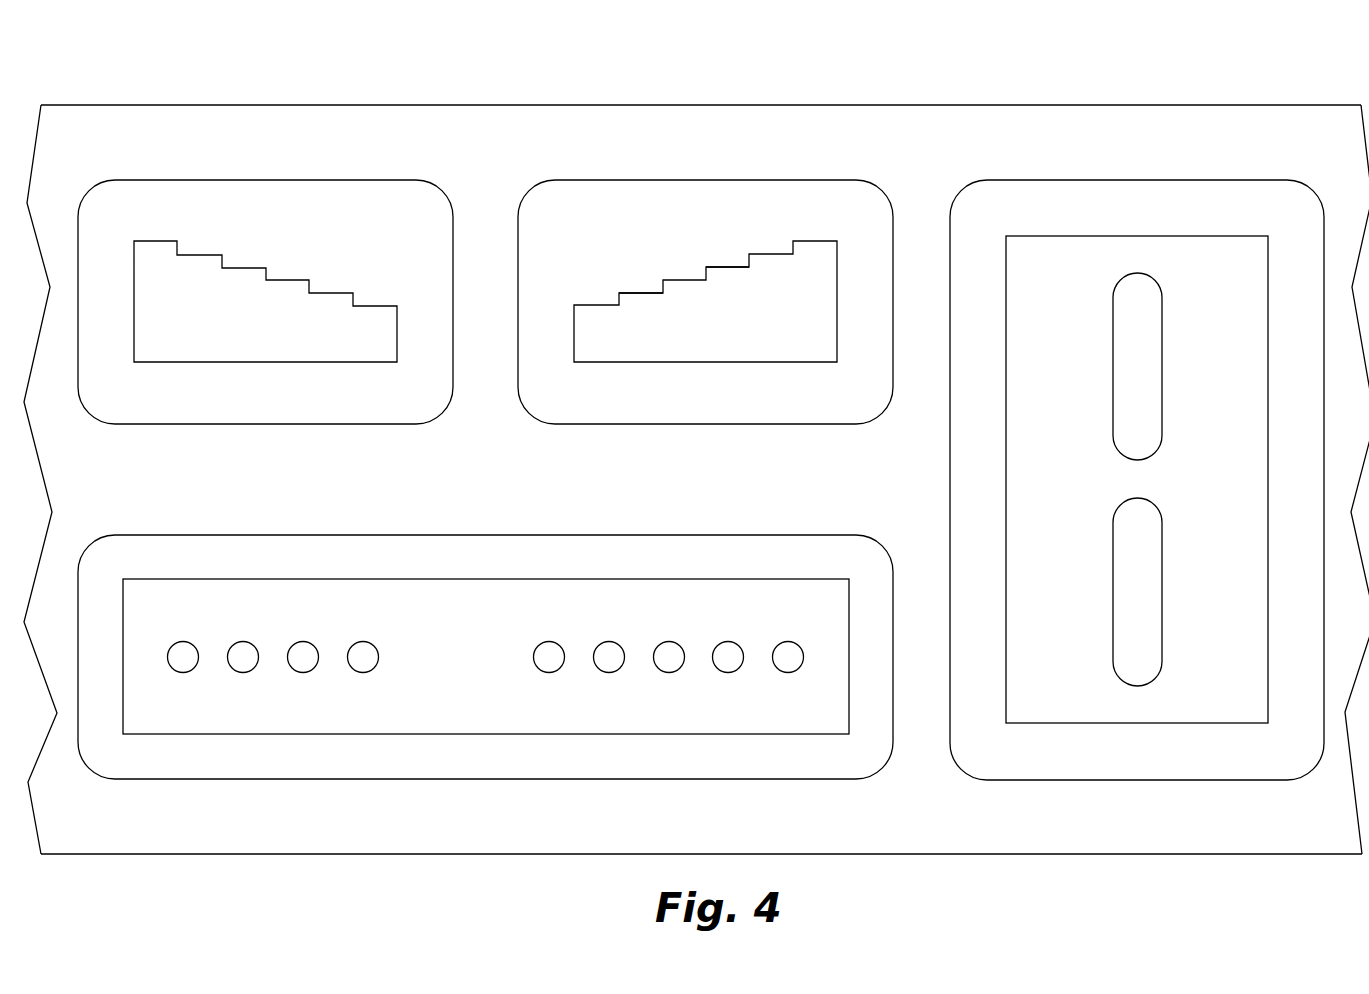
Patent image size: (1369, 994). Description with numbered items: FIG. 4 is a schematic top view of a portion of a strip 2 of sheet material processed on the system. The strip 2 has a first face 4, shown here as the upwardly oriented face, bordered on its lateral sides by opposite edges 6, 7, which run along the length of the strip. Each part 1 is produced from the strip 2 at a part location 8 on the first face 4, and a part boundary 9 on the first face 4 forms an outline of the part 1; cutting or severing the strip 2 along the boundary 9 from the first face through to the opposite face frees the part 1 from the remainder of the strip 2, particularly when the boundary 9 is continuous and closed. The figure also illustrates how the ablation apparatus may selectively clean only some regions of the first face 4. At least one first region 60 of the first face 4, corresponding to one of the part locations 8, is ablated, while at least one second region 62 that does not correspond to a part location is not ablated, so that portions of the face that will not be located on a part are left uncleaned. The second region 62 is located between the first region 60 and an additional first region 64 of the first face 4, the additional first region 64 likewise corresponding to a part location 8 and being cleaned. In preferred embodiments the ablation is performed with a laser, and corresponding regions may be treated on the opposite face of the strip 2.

The part 1 is at (815, 237).
The strip 2 is at (696, 465).
The first face 4 is at (483, 130).
The edge 6 is at (1112, 854).
The edge 7 is at (667, 105).
The part location 8 is at (719, 258).
The part boundary 9 is at (640, 293).
The first region 60 is at (214, 180).
The second region 62 is at (418, 150).
The additional first region 64 is at (585, 180).